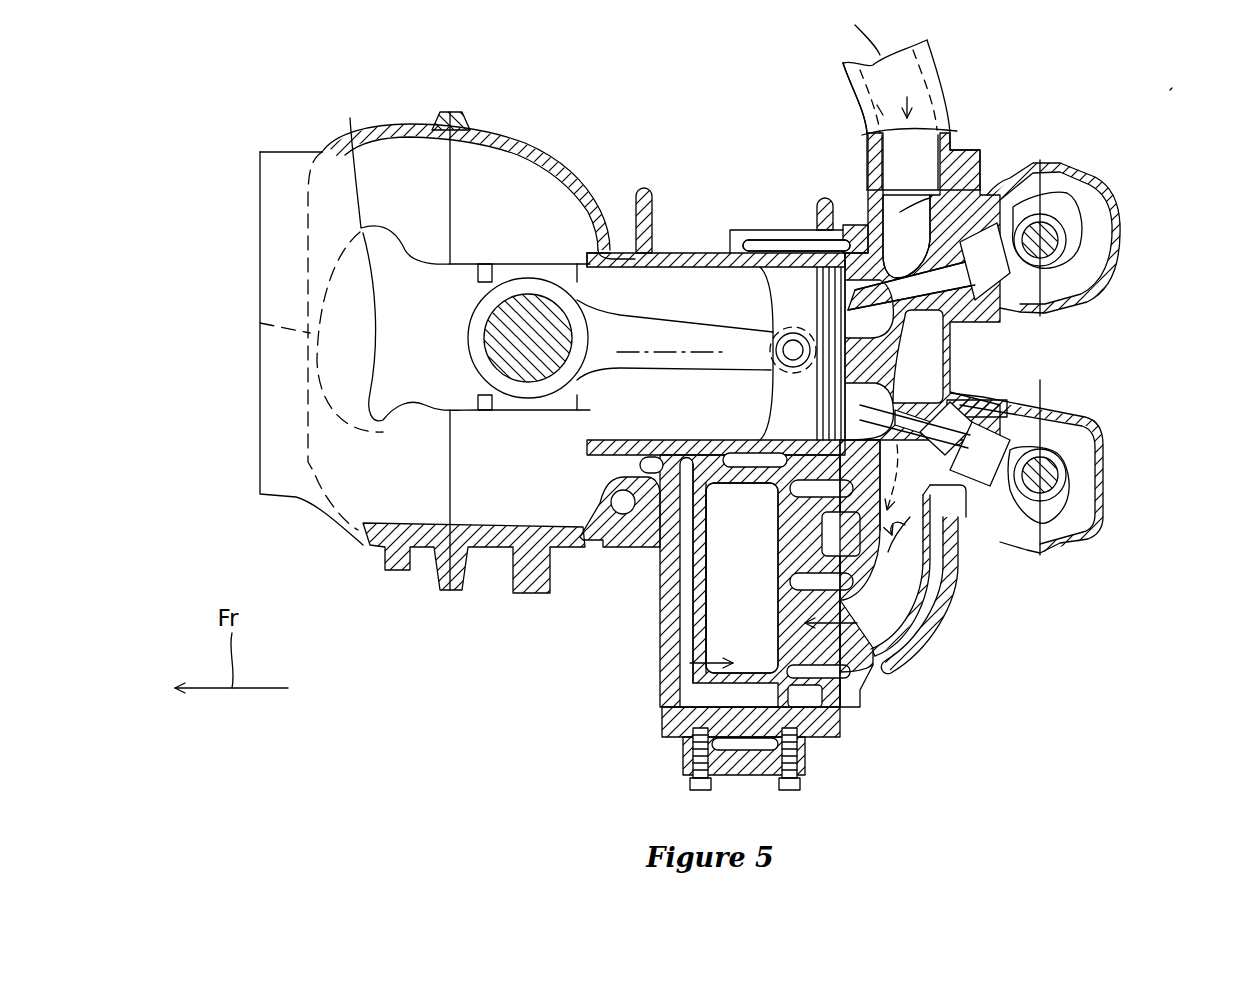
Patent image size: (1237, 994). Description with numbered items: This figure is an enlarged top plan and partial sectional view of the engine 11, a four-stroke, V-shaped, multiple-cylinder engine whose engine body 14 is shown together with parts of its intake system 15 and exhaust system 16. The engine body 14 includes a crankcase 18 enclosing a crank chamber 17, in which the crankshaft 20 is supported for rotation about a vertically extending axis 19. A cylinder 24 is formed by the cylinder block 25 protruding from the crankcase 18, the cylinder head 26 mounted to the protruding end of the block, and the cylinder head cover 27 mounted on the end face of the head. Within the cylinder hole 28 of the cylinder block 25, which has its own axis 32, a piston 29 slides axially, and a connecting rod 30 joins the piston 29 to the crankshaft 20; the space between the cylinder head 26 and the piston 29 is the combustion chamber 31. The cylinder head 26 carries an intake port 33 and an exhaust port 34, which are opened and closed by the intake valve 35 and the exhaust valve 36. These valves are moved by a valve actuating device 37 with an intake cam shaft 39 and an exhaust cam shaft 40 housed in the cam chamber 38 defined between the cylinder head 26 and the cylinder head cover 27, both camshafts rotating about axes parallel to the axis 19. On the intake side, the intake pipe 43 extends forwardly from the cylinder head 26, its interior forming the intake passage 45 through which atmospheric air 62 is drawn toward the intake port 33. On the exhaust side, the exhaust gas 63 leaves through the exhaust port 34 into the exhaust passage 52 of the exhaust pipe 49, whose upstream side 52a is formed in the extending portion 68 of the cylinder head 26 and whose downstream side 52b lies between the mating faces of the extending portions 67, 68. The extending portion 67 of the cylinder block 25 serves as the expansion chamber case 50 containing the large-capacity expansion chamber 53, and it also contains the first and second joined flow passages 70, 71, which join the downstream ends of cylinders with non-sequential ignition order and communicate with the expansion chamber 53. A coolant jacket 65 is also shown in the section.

The engine 11 is at (1172, 88).
The engine body 14 is at (560, 133).
The intake system 15 is at (967, 57).
The exhaust system 16 is at (943, 687).
The crank chamber 17 is at (383, 163).
The crankcase 18 is at (432, 125).
The axis 19 is at (530, 340).
The crankshaft 20 is at (260, 323).
The cylinder 24 is at (727, 292).
The cylinder block 25 is at (673, 250).
The cylinder head 26 is at (983, 175).
The cylinder head cover 27 is at (1113, 220).
The cylinder hole 28 is at (603, 400).
The piston 29 is at (790, 243).
The connecting rod 30 is at (537, 403).
The combustion chamber 31 is at (828, 275).
The axis of cylinder hole 32 is at (640, 356).
The intake port 33 is at (960, 178).
The exhaust port 34 is at (955, 425).
The intake valve 35 is at (848, 335).
The exhaust valve 36 is at (857, 397).
The valve actuating device 37 is at (1076, 465).
The cam chamber 38 is at (1080, 517).
The intake cam shaft 39 is at (1073, 253).
The exhaust cam shaft 40 is at (1073, 487).
The intake pipe 43 is at (850, 78).
The intake passage 45 is at (890, 108).
The exhaust pipe 49 is at (934, 620).
The expansion chamber case 50 is at (688, 615).
The exhaust passage 52 is at (877, 603).
The upstream side of exhaust passage 52a is at (953, 573).
The downstream side of exhaust passage 52b is at (828, 523).
The expansion chamber 53 is at (695, 660).
The atmospheric air 62 is at (858, 28).
The exhaust gas 63 is at (950, 550).
The coolant jacket 65 is at (685, 690).
The extending portion of cylinder block 67 is at (662, 618).
The extending portion of cylinder head 68 is at (907, 660).
The first joined flow passage 70 is at (800, 540).
The second joined flow passage 71 is at (803, 633).